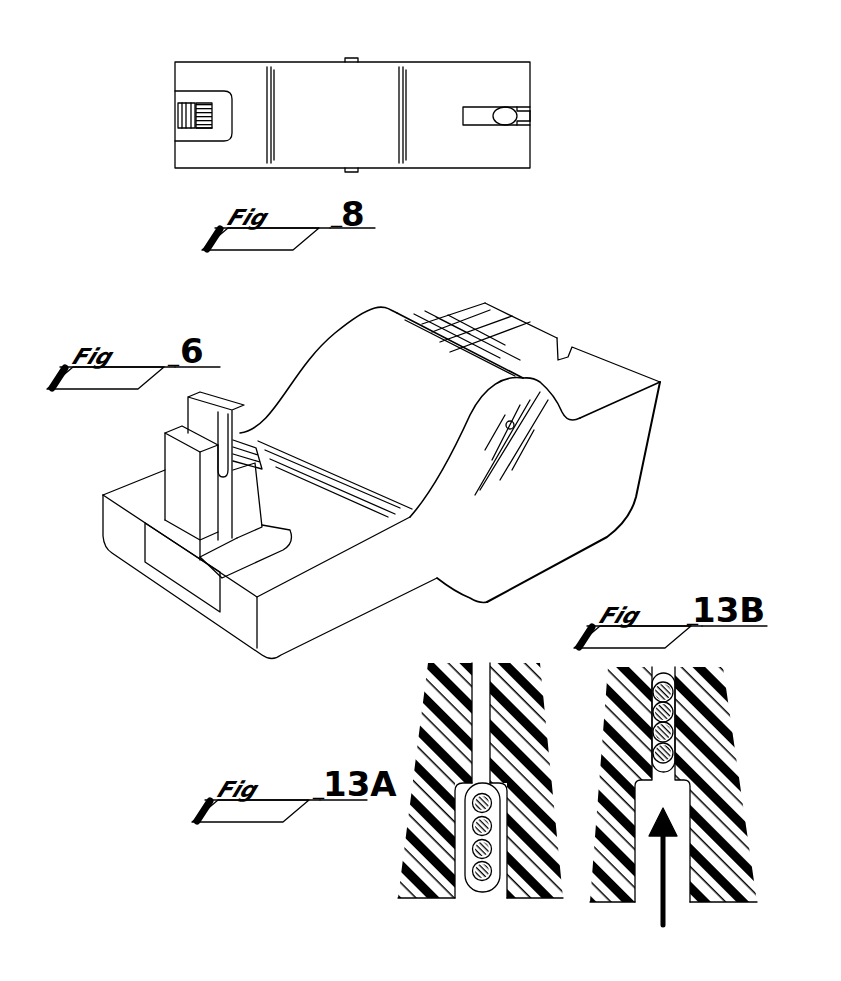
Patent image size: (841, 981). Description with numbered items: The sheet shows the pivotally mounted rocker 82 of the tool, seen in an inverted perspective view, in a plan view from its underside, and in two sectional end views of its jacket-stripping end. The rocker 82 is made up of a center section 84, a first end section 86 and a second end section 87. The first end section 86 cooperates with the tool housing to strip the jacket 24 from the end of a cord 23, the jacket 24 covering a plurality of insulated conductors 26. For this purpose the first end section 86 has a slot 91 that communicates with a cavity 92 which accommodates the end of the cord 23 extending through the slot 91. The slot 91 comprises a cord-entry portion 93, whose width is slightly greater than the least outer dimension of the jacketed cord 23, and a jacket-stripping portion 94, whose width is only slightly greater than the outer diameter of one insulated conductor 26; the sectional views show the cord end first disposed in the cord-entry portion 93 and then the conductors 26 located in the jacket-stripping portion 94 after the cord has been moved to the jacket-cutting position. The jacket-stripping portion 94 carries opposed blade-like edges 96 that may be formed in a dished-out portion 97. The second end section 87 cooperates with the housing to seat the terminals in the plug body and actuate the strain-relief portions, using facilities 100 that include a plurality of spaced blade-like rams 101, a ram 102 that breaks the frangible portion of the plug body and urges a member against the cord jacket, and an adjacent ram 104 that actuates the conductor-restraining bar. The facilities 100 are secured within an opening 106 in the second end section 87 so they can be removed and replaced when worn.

In FIG. 13A, the cord 23 is at (486, 893).
In FIG. 13A, the jacket 24 is at (420, 898).
In FIG. 13A, the insulated conductor 26 is at (480, 847).
In FIG. 13B, the insulated conductor 26 is at (668, 683).
In FIG. 8, the rocker 82 is at (324, 60).
In FIG. 6, the rocker 82 is at (486, 292).
In FIG. 6, the center section 84 is at (505, 572).
In FIG. 6, the first end section 86 is at (597, 518).
In FIG. 6, the second end section 87 is at (342, 608).
In FIG. 8, the slot 91 is at (535, 118).
In FIG. 6, the slot 91 is at (567, 338).
In FIG. 13A, the slot 91 is at (480, 898).
In FIG. 13B, the slot 91 is at (678, 896).
In FIG. 8, the cavity 92 is at (478, 112).
In FIG. 13A, the cord-entry portion 93 is at (457, 807).
In FIG. 13B, the cord-entry portion 93 is at (648, 885).
In FIG. 13A, the jacket-stripping portion 94 is at (474, 748).
In FIG. 8, the blade-like edge 96 is at (519, 109).
In FIG. 8, the dished-out portion 97 is at (530, 122).
In FIG. 8, the facilities 100 is at (162, 124).
In FIG. 6, the facilities 100 is at (173, 425).
In FIG. 8, the blade-like ram 101 is at (204, 130).
In FIG. 6, the blade-like ram 101 is at (253, 457).
In FIG. 8, the ram 102 is at (178, 115).
In FIG. 6, the ram 102 is at (183, 497).
In FIG. 8, the ram 104 is at (196, 107).
In FIG. 6, the ram 104 is at (227, 410).
In FIG. 6, the opening 106 is at (167, 562).